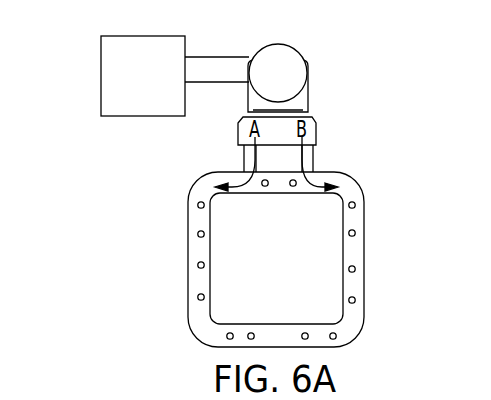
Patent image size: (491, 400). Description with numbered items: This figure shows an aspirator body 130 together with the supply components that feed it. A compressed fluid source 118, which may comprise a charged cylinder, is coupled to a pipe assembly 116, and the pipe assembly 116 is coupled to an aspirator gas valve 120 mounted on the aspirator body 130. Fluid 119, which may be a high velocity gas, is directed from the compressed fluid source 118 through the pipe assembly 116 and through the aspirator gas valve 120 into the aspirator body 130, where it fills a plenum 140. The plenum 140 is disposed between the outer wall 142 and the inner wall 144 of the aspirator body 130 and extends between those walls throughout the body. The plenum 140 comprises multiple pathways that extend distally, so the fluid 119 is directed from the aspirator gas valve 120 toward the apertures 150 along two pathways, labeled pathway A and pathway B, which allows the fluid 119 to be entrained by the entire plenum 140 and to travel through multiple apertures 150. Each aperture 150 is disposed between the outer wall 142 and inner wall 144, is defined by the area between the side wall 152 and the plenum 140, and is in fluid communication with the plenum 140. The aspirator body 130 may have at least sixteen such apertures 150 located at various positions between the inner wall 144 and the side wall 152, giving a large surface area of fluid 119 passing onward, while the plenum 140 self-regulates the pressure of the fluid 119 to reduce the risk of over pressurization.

The pipe assembly 116 is at (235, 58).
The compressed fluid source 118 is at (106, 69).
The fluid 119 is at (143, 76).
The aspirator gas valve 120 is at (293, 55).
The aspirator body 130 is at (277, 231).
The plenum 140 is at (294, 343).
The outer wall 142 is at (363, 193).
The inner wall 144 is at (342, 250).
The aperture 150 is at (356, 270).
The side wall 152 is at (328, 231).